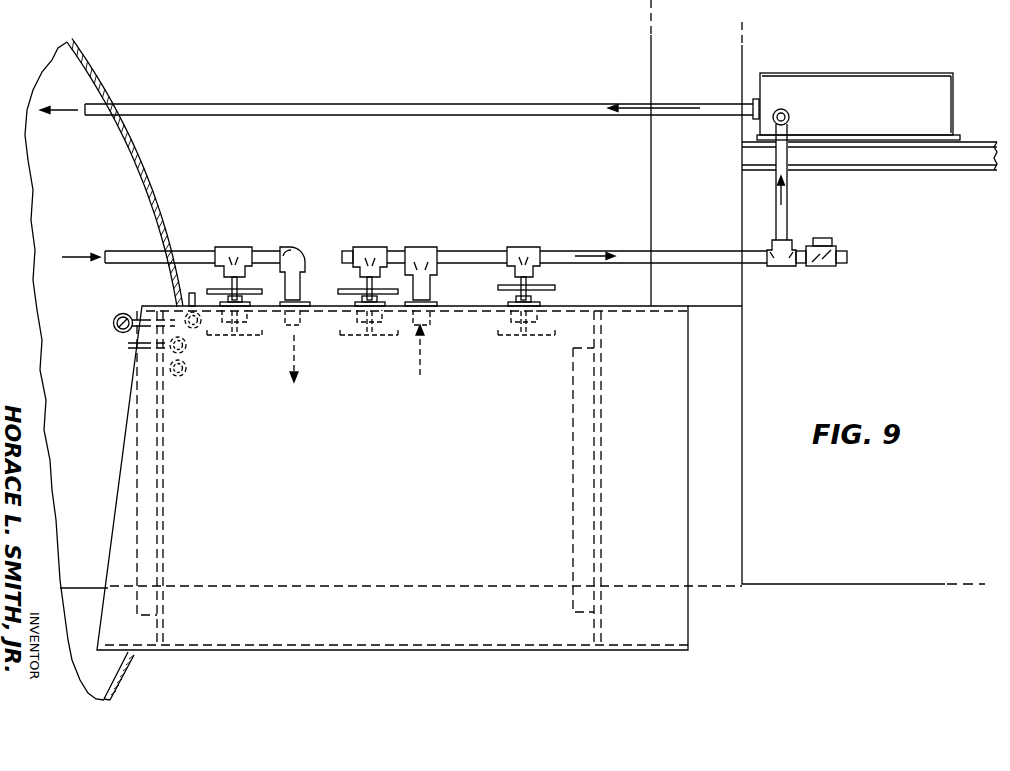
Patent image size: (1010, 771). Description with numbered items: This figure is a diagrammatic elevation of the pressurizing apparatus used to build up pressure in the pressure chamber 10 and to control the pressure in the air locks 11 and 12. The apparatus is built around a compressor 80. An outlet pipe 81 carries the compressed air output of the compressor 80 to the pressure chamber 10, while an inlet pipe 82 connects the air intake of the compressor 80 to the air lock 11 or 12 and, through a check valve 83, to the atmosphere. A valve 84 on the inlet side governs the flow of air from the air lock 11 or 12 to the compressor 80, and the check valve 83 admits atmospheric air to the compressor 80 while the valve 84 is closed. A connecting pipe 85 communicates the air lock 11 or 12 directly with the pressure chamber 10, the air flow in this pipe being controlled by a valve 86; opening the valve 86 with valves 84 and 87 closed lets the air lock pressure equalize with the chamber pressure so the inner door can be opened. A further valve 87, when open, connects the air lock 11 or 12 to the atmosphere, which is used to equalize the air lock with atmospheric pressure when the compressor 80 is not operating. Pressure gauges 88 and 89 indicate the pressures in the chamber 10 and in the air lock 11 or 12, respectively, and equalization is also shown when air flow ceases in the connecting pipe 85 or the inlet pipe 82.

The pressure chamber 10 is at (160, 186).
The air lock 11 is at (419, 496).
The air lock 12 is at (333, 651).
The compressor 80 is at (858, 95).
The outlet pipe 81 is at (402, 108).
The inlet pipe 82 is at (621, 259).
The check valve 83 is at (825, 268).
The valve 84 is at (522, 258).
The connecting pipe 85 is at (273, 251).
The valve 86 is at (233, 258).
The valve 87 is at (368, 258).
The pressure gauge 88 is at (188, 346).
The pressure gauge 89 is at (187, 372).